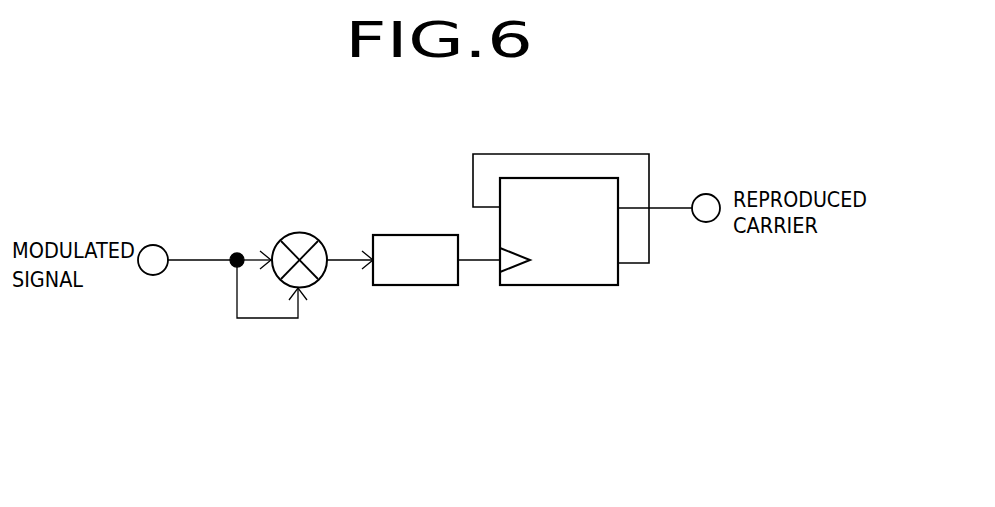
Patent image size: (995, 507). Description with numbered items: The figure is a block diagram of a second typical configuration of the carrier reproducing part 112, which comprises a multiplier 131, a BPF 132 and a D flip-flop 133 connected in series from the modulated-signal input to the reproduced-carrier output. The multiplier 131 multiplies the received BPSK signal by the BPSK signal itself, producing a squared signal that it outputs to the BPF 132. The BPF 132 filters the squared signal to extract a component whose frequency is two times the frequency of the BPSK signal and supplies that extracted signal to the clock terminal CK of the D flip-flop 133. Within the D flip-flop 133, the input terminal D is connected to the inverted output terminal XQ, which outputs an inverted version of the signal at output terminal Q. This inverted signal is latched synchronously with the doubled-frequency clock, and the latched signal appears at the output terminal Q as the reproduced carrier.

The carrier reproducing part 112 is at (588, 452).
The multiplier 131 is at (302, 232).
The BPF (Band Pass Filter) 132 is at (418, 232).
The D flip-flop 133 is at (560, 288).